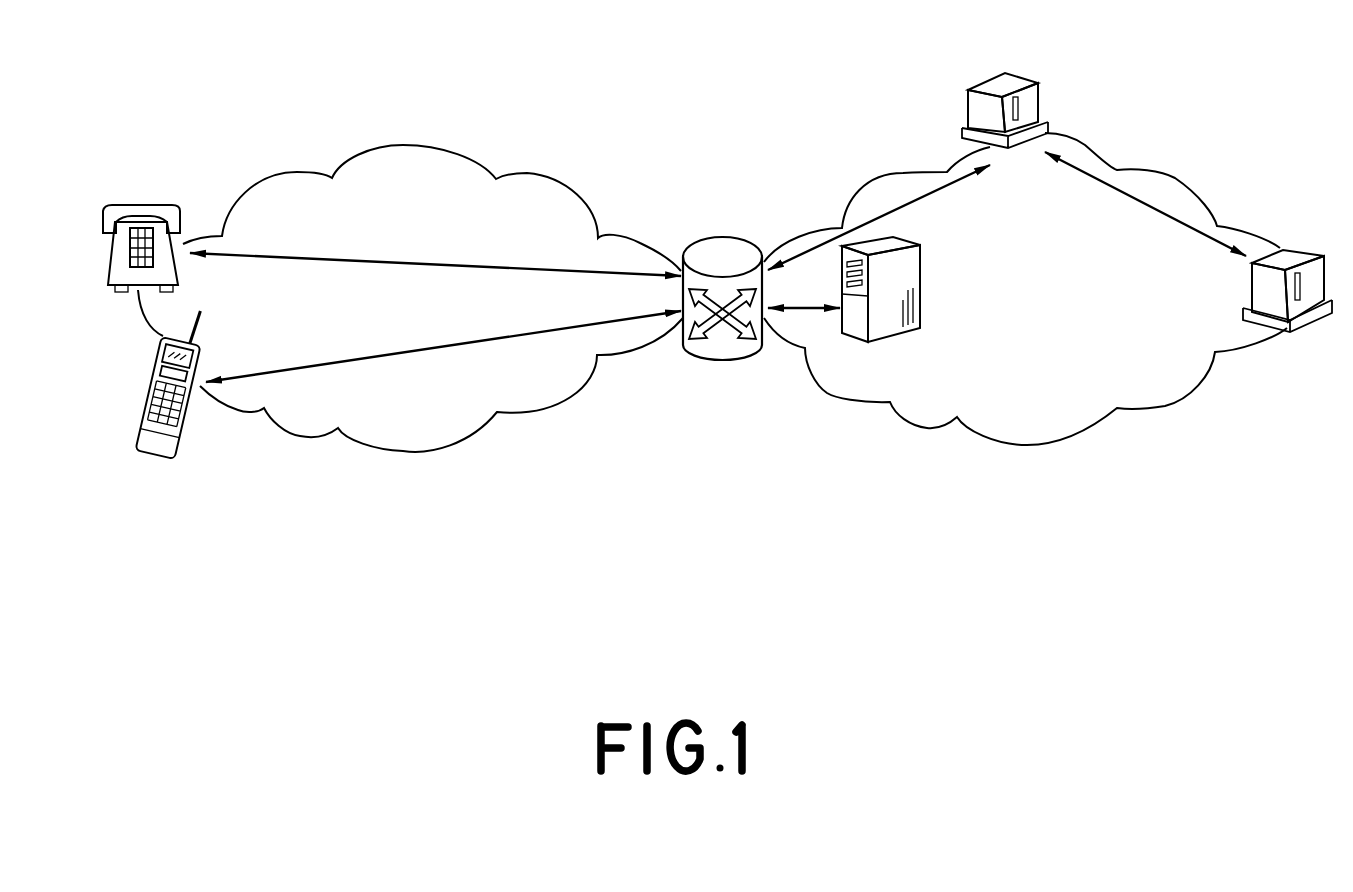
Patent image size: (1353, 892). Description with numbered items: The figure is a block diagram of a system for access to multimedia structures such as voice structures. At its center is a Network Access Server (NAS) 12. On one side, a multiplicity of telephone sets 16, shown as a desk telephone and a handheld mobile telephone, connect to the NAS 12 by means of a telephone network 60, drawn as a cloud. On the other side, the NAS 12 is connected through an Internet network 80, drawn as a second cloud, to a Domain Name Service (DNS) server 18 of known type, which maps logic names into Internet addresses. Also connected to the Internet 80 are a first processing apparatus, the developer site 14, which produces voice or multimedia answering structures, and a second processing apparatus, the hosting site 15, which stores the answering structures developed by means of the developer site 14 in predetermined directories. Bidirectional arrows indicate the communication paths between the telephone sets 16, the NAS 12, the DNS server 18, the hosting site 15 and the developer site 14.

The Network Access Server (NAS) 12 is at (688, 387).
The first processing apparatus (developer site) 14 is at (1270, 370).
The second processing apparatus (hosting site) 15 is at (948, 60).
The telephone sets 16 is at (190, 171).
The Domain Name Service (DNS) server 18 is at (898, 320).
The telephone network 60 is at (432, 160).
The Internet network 80 is at (1170, 198).